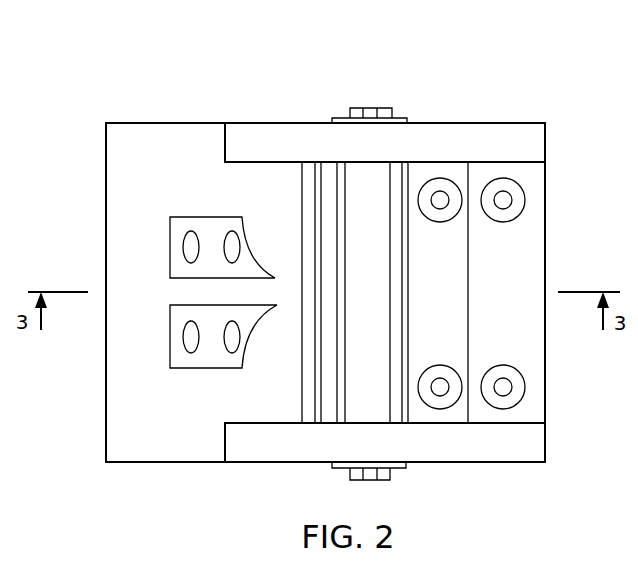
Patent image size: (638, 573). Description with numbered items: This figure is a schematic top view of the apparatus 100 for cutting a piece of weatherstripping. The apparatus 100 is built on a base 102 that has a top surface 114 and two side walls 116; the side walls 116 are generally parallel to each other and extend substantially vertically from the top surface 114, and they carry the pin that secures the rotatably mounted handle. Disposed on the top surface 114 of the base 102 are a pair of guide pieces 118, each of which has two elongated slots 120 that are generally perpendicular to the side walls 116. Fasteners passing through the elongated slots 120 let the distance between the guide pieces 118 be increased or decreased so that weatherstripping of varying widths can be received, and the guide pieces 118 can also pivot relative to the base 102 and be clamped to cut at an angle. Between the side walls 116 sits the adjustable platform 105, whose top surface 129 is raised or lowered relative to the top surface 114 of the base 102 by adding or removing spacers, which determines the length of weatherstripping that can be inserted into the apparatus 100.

The apparatus 100 is at (368, 48).
The base 102 is at (177, 463).
The adjustable platform 105 is at (523, 256).
The top surface 114 is at (192, 142).
The side walls 116 is at (462, 132).
The guide pieces 118 is at (175, 216).
The elongated slots 120 is at (228, 247).
The top surface 129 is at (535, 307).